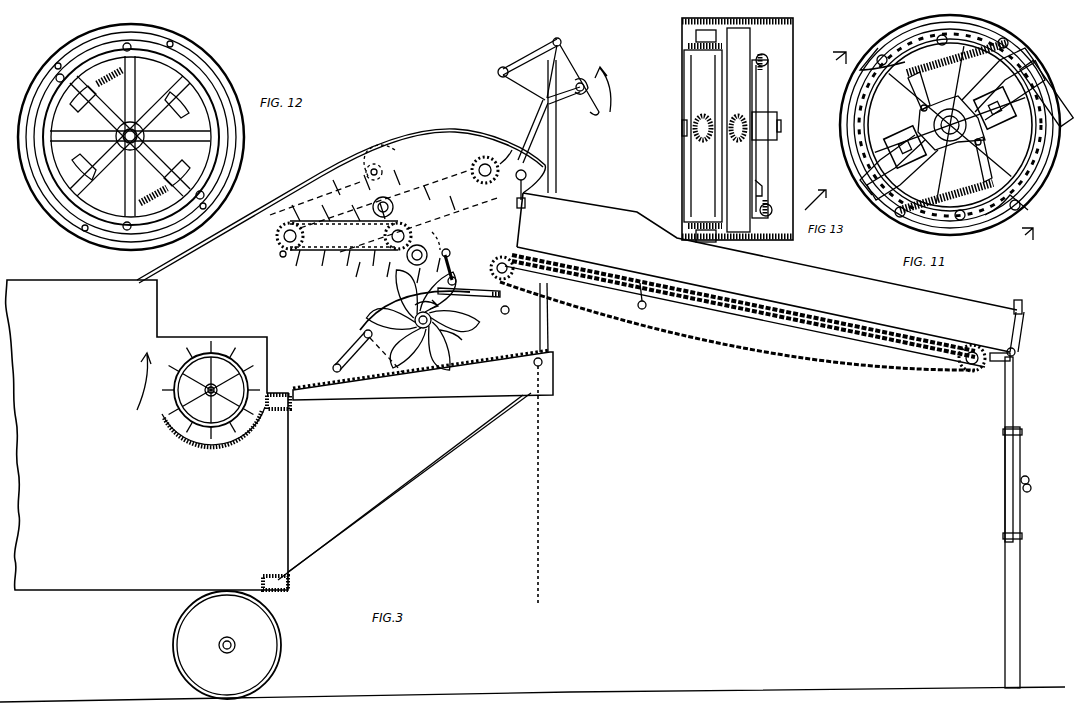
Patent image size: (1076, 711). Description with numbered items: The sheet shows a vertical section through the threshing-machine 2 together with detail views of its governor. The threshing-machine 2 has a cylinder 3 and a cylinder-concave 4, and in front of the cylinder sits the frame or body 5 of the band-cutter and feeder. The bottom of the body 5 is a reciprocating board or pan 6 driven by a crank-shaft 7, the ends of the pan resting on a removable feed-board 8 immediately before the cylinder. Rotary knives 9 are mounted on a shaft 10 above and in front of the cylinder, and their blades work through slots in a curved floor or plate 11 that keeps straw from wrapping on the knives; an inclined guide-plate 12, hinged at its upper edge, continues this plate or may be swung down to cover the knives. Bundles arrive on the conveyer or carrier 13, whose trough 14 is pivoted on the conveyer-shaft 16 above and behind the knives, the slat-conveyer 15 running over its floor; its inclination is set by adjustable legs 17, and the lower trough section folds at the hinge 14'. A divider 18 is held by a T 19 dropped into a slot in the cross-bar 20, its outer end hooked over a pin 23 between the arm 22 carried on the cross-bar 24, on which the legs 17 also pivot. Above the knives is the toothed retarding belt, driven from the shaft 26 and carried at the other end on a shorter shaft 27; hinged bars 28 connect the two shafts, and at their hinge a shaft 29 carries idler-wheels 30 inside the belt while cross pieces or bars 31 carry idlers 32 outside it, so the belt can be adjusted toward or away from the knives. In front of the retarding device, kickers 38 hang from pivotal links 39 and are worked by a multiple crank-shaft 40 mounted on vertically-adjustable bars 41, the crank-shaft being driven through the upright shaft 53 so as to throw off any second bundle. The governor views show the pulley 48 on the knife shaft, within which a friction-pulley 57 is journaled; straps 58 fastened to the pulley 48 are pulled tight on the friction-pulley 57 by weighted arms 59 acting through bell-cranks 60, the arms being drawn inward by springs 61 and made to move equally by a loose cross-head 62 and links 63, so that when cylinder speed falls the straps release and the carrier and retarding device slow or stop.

In FIG. 3, the threshing-machine 2 is at (147, 435).
In FIG. 3, the cylinder 3 is at (244, 368).
In FIG. 3, the cylinder-concave 4 is at (236, 444).
In FIG. 3, the frame or body 5 is at (420, 150).
In FIG. 3, the reciprocating board or pan 6 is at (496, 362).
In FIG. 3, the crank-shaft 7 is at (554, 362).
In FIG. 3, the feed-board 8 is at (290, 404).
In FIG. 3, the rotary knives 9 is at (456, 304).
In FIG. 3, the knife shaft 10 is at (450, 322).
In FIG. 3, the curved floor or plate 11 is at (395, 302).
In FIG. 3, the inclined guide-plate 12 is at (350, 350).
In FIG. 3, the conveyer or carrier 13 is at (766, 316).
In FIG. 3, the trough 14 is at (757, 307).
In FIG. 3, the hinge 14' is at (656, 303).
In FIG. 3, the slat-conveyer 15 is at (707, 343).
In FIG. 3, the conveyer-shaft 16 is at (512, 272).
In FIG. 3, the adjustable legs 17 is at (1022, 460).
In FIG. 3, the divider 18 is at (833, 282).
In FIG. 3, the T 19 is at (518, 203).
In FIG. 3, the cross-bar 20 is at (527, 190).
In FIG. 3, the arm 22 is at (1022, 304).
In FIG. 3, the pin 23 is at (1023, 313).
In FIG. 3, the cross-bar 24 is at (1017, 352).
In FIG. 3, the shaft 26 is at (496, 166).
In FIG. 3, the shorter shaft 27 is at (278, 232).
In FIG. 3, the hinged bars 28 is at (332, 256).
In FIG. 3, the shaft 29 is at (442, 241).
In FIG. 3, the idler-wheels 30 is at (385, 211).
In FIG. 3, the cross pieces or bars 31 is at (452, 262).
In FIG. 3, the idlers 32 is at (374, 200).
In FIG. 3, the kickers 38 is at (596, 98).
In FIG. 3, the pivotal links 39 is at (510, 62).
In FIG. 3, the multiple crank-shaft 40 is at (578, 95).
In FIG. 3, the vertically-adjustable bars 41 is at (546, 118).
In FIG. 3, the upright shaft 53 is at (552, 155).
In FIG. 12, the pulley 48 is at (192, 52).
In FIG. 13, the pulley 48 is at (791, 192).
In FIG. 11, the pulley 48 is at (840, 118).
In FIG. 12, the friction-pulley 57 is at (130, 136).
In FIG. 13, the friction-pulley 57 is at (688, 73).
In FIG. 11, the friction-pulley 57 is at (1025, 185).
In FIG. 12, the straps 58 is at (205, 86).
In FIG. 11, the straps 58 is at (858, 135).
In FIG. 12, the weighted arms 59 is at (130, 136).
In FIG. 13, the weighted arms 59 is at (769, 139).
In FIG. 11, the weighted arms 59 is at (1010, 80).
In FIG. 12, the bell-cranks 60 is at (55, 72).
In FIG. 13, the bell-cranks 60 is at (700, 37).
In FIG. 12, the springs 61 is at (132, 136).
In FIG. 13, the springs 61 is at (772, 129).
In FIG. 11, the springs 61 is at (985, 35).
In FIG. 13, the loose cross-head 62 is at (766, 114).
In FIG. 11, the loose cross-head 62 is at (950, 128).
In FIG. 13, the links 63 is at (770, 181).
In FIG. 11, the links 63 is at (948, 127).